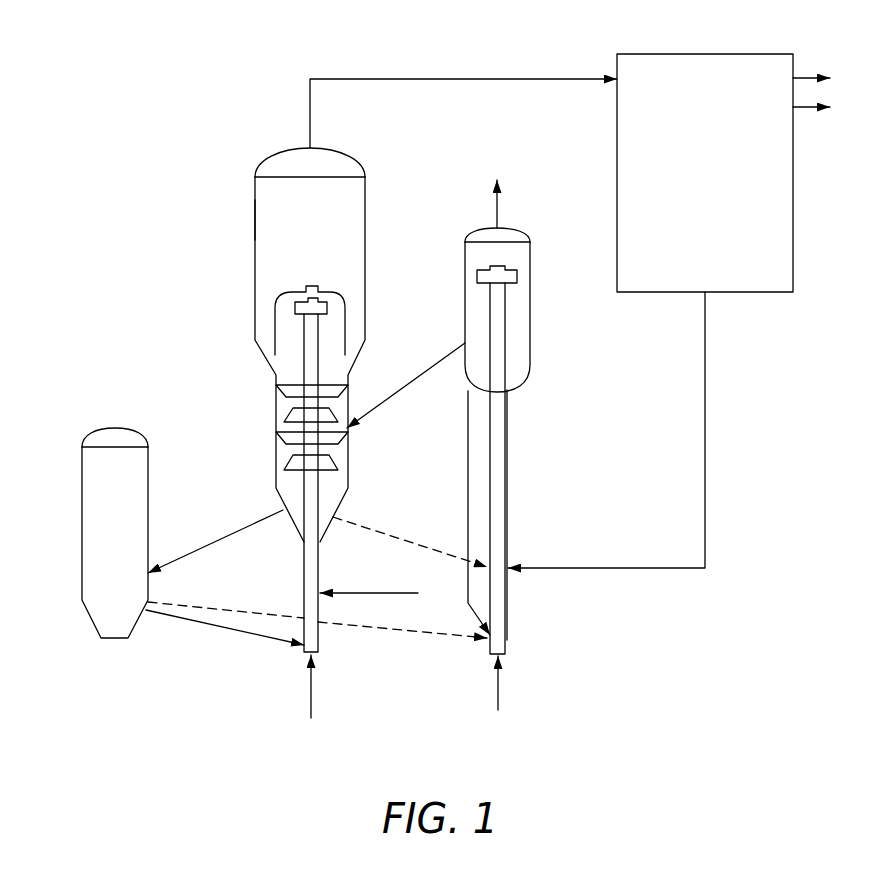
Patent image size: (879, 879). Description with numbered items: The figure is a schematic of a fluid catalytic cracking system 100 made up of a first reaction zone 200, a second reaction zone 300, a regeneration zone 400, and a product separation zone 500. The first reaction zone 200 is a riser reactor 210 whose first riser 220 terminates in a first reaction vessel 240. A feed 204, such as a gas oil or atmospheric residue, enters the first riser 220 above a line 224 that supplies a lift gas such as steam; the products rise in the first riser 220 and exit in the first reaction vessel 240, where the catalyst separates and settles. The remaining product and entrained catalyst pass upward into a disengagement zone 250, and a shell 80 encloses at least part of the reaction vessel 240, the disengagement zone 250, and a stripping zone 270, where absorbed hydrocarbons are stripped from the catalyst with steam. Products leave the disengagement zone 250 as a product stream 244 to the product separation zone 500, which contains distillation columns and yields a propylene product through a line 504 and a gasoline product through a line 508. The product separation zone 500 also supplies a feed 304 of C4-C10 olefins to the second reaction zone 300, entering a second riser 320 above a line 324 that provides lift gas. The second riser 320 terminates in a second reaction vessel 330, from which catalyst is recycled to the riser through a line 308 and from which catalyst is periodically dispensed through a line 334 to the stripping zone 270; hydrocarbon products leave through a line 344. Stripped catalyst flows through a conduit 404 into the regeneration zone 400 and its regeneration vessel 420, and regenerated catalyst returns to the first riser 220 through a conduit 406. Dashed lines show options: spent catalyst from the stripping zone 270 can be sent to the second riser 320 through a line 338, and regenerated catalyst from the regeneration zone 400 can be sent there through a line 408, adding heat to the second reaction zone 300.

The fluid catalytic cracking system 100 is at (163, 50).
The first reaction zone 200 is at (155, 110).
The riser reactor 210 is at (190, 305).
The shell 80 is at (255, 218).
The disengagement zone 250 is at (324, 218).
The first reaction vessel 240 is at (337, 328).
The first riser 220 is at (320, 562).
The stripping zone 270 is at (247, 452).
The line 224 is at (311, 686).
The feed 204 is at (400, 592).
The product stream 244 is at (397, 79).
The product separation zone 500 is at (723, 176).
The line 504 is at (811, 77).
The line 508 is at (811, 108).
The feed 304 is at (585, 572).
The second reaction vessel 330 is at (530, 275).
The line 344 is at (497, 202).
The second reaction zone 300 is at (550, 350).
The line 334 is at (400, 395).
The second riser 320 is at (505, 463).
The line 308 is at (468, 463).
The line 338 is at (398, 533).
The line 324 is at (498, 684).
The regeneration zone 400 is at (90, 425).
The regeneration vessel 420 is at (127, 536).
The conduit 404 is at (223, 540).
The conduit 406 is at (223, 633).
The line 408 is at (398, 632).